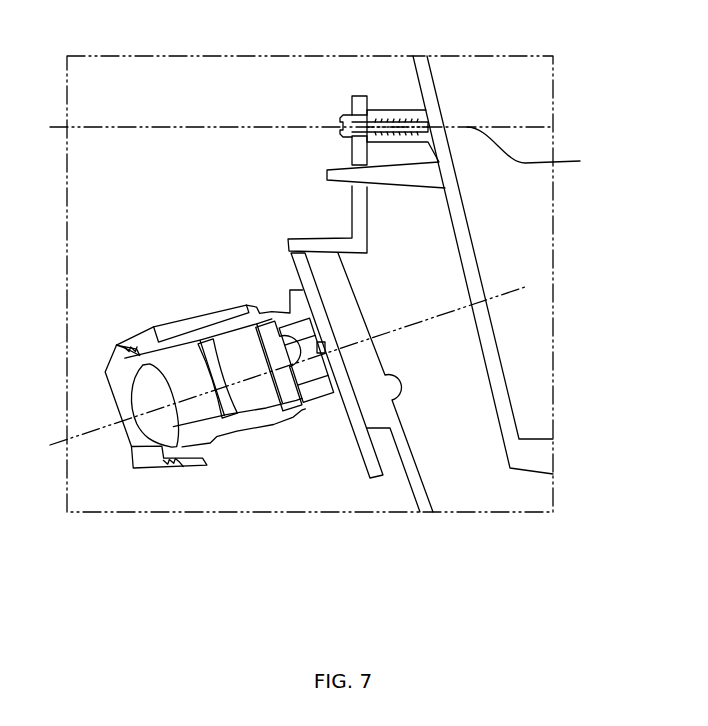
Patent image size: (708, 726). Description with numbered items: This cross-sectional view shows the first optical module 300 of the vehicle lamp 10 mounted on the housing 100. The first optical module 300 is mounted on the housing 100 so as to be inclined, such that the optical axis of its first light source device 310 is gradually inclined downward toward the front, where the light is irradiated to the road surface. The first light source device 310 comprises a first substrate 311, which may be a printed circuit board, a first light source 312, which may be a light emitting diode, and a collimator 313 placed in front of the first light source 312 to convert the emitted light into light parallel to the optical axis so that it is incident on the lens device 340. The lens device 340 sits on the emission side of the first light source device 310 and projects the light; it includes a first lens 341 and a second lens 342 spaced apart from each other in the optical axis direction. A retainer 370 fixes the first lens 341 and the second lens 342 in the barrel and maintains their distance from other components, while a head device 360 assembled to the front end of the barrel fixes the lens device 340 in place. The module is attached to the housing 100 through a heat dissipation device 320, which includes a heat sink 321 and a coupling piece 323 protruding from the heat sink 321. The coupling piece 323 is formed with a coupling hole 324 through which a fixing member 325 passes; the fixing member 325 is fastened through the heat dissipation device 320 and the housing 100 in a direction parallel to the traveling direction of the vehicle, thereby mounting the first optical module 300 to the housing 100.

The vehicle lamp 10 is at (612, 181).
The housing 100 is at (447, 183).
The first optical module 300 is at (264, 429).
The first light source device 310 is at (328, 416).
The first substrate 311 is at (370, 465).
The first light source 312 is at (325, 353).
The collimator 313 is at (300, 363).
The heat dissipation device 320 is at (447, 266).
The heat sink 321 is at (347, 315).
The coupling piece 323 is at (363, 197).
The coupling hole 324 is at (372, 125).
The fixing member 325 is at (347, 116).
The lens device 340 is at (264, 422).
The first lens 341 is at (231, 343).
The second lens 342 is at (162, 418).
The head device 360 is at (128, 388).
The retainer 370 is at (167, 350).